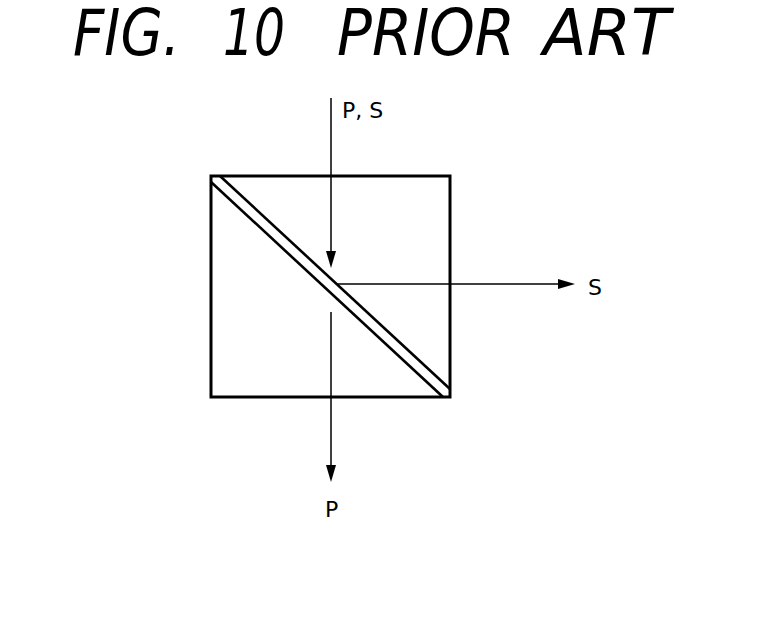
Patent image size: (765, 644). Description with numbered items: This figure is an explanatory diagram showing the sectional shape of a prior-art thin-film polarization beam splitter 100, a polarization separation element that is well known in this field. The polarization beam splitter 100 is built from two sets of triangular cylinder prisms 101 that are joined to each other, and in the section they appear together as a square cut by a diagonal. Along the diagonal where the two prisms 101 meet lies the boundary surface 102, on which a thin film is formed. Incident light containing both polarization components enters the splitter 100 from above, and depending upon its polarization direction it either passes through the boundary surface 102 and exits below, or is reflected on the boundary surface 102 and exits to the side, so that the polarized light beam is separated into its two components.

The polarization beam splitter 100 is at (331, 265).
The triangular cylinder prisms 101 is at (303, 223).
The boundary surface 102 is at (423, 358).